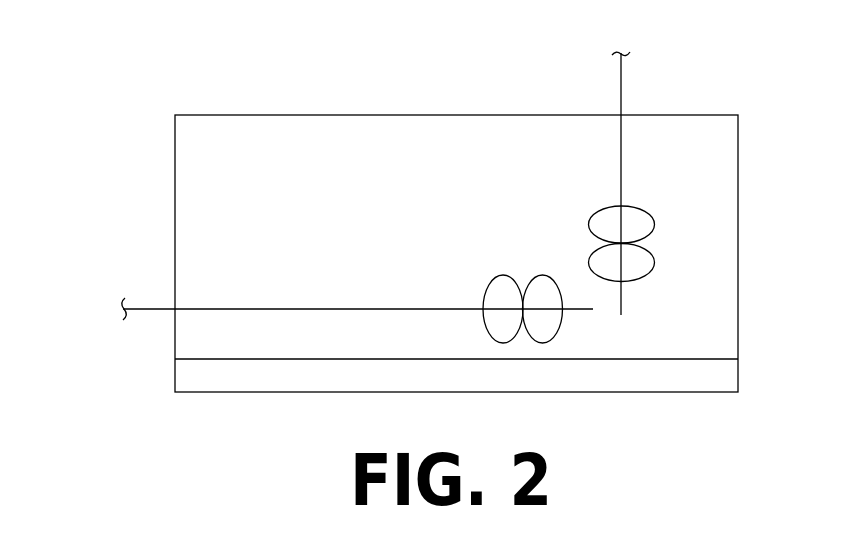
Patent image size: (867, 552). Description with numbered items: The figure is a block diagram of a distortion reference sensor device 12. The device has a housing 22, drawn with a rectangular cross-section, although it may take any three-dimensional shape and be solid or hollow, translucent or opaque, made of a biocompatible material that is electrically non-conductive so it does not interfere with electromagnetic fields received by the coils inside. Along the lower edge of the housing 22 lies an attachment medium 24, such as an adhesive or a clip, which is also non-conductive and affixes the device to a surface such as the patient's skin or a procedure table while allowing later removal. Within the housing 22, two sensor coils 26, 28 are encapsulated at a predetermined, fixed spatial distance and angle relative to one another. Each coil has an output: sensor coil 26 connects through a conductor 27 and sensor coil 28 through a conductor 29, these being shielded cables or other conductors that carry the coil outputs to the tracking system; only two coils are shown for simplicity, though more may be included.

The distortion reference sensor (DRS) device 12 is at (102, 62).
The housing 22 is at (452, 114).
The attachment medium 24 is at (268, 393).
The sensor coil 26 is at (598, 210).
The conductor 27 is at (621, 95).
The sensor coil 28 is at (487, 322).
The conductor 29 is at (150, 308).